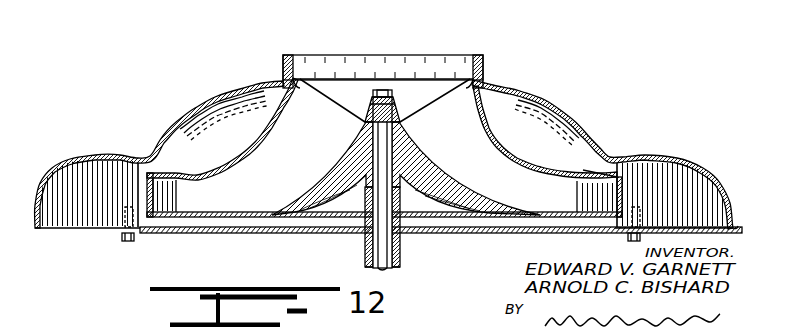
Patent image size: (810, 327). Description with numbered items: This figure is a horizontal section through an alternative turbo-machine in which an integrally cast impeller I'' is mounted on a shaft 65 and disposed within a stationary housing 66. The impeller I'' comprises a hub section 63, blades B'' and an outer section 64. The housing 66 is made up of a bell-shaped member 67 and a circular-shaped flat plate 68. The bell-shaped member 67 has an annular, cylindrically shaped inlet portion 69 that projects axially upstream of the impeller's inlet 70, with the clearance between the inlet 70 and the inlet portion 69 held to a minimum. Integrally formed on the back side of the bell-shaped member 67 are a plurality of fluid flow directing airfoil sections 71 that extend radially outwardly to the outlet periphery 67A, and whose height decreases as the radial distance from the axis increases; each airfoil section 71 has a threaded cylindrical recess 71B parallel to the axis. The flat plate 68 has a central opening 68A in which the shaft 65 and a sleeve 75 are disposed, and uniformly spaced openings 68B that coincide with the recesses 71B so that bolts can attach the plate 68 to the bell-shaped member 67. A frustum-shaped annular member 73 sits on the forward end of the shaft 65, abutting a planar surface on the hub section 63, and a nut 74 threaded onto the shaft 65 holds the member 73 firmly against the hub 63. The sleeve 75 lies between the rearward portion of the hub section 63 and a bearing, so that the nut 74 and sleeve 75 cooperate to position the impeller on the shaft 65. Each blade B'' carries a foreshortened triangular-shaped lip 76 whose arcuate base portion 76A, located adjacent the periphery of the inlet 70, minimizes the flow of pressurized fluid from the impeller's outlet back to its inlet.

The hub section 63 is at (467, 214).
The outer section 64 is at (262, 150).
The shaft 65 is at (380, 237).
The stationary housing 66 is at (196, 112).
The bell-shaped member 67 is at (58, 166).
The outlet periphery 67A is at (736, 232).
The circular-shaped flat plate 68 is at (518, 231).
The opening 68A is at (402, 235).
The openings 68B is at (138, 233).
The inlet portion 69 is at (484, 68).
The impeller inlet 70 is at (291, 79).
The airfoil sections 71 is at (66, 221).
The threaded cylindrical recess 71B is at (122, 218).
The frustum-shaped annular member 73 is at (396, 116).
The nut 74 is at (371, 106).
The sleeve 75 is at (367, 261).
The triangular-shaped lip 76 is at (437, 79).
The arcuate base portion 76A is at (300, 78).
The impeller I'' is at (610, 151).
The blades B'' is at (381, 138).